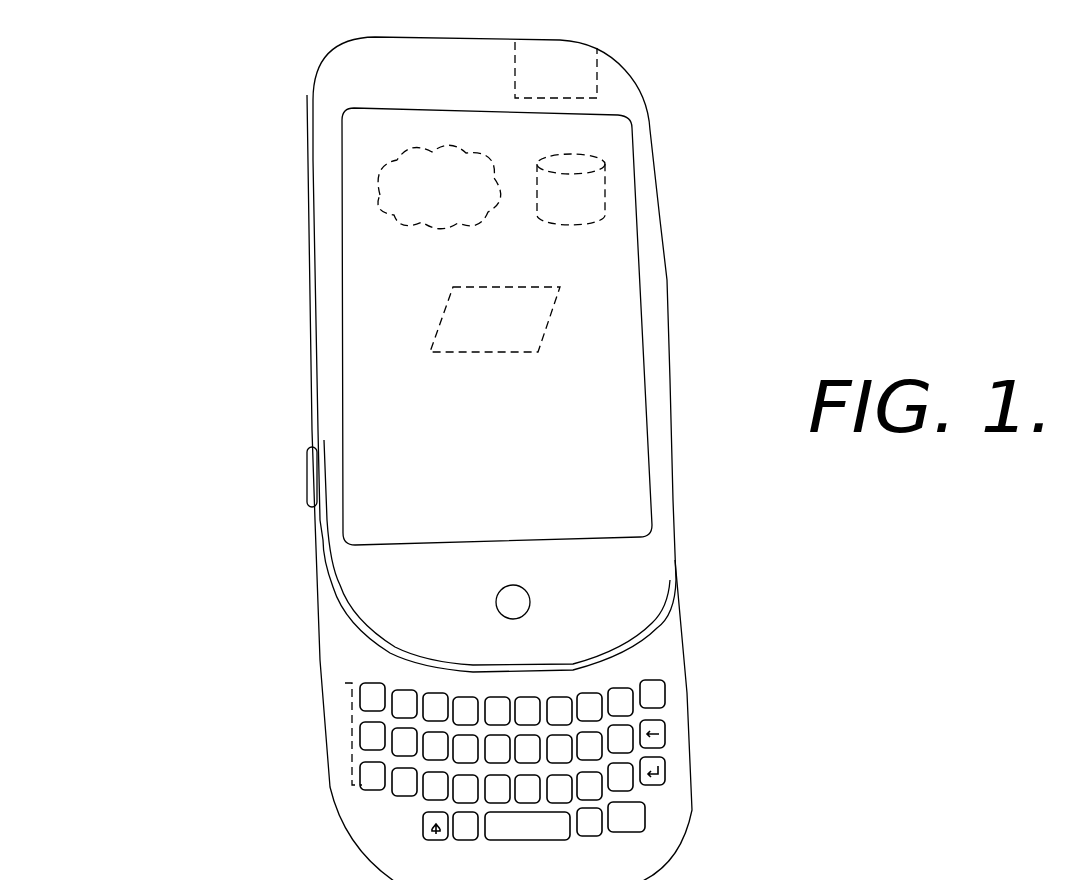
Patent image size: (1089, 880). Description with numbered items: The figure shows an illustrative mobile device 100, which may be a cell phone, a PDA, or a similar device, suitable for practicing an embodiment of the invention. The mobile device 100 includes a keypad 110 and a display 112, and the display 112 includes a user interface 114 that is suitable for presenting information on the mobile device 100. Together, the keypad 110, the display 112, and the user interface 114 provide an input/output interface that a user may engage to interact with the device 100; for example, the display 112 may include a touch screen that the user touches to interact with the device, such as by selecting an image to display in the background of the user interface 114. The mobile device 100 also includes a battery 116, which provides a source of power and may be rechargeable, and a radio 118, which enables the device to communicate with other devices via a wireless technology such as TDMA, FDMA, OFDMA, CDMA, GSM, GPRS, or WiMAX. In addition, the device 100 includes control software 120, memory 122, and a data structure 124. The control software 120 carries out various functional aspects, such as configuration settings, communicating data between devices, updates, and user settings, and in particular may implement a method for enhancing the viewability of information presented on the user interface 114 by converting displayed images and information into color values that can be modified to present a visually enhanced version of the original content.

The mobile device 100 is at (126, 320).
The keypad 110 is at (667, 695).
The display 112 is at (648, 380).
The user interface 114 is at (612, 462).
The battery 116 is at (343, 685).
The radio 118 is at (600, 68).
The control software 120 is at (376, 197).
The memory 122 is at (486, 352).
The data structure 124 is at (605, 190).